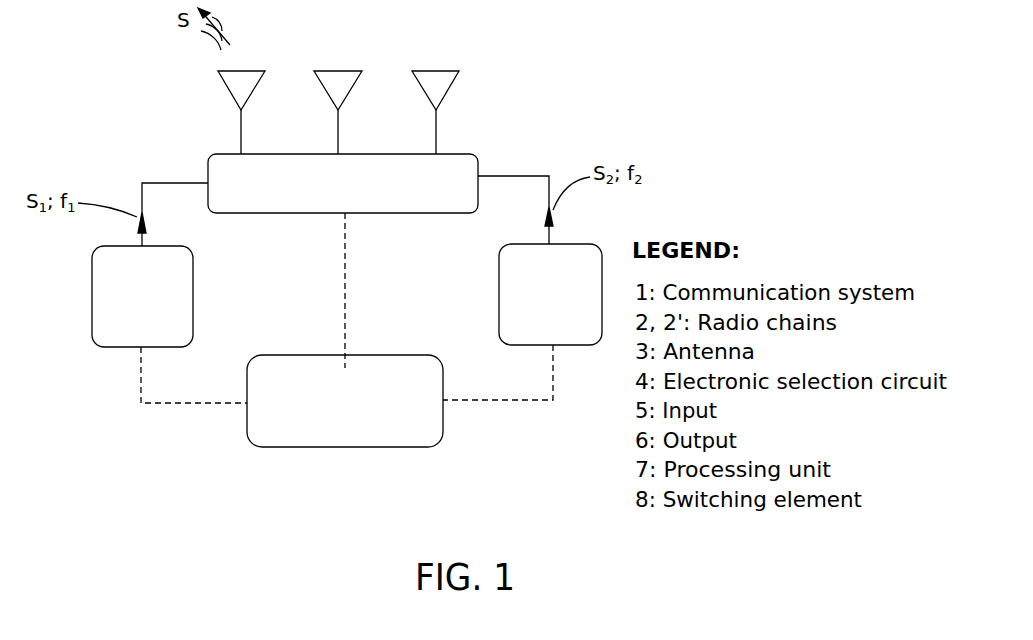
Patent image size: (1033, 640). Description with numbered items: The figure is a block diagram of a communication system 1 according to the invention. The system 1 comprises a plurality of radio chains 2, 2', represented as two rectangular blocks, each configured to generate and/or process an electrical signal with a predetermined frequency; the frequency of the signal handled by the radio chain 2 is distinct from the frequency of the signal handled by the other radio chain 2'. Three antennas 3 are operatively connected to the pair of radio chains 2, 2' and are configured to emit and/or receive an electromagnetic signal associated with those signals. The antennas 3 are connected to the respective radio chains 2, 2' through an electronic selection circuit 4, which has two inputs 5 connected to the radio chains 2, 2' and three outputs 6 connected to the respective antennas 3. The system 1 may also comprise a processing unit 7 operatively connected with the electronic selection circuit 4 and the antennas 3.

The communication system 1 is at (529, 141).
The radio chain 2 is at (142, 296).
The radio chain 2' is at (550, 294).
The antenna 3 is at (251, 92).
The electronic selection circuit 4 is at (352, 196).
The input 5 is at (208, 185).
The output 6 is at (338, 153).
The processing unit 7 is at (352, 416).